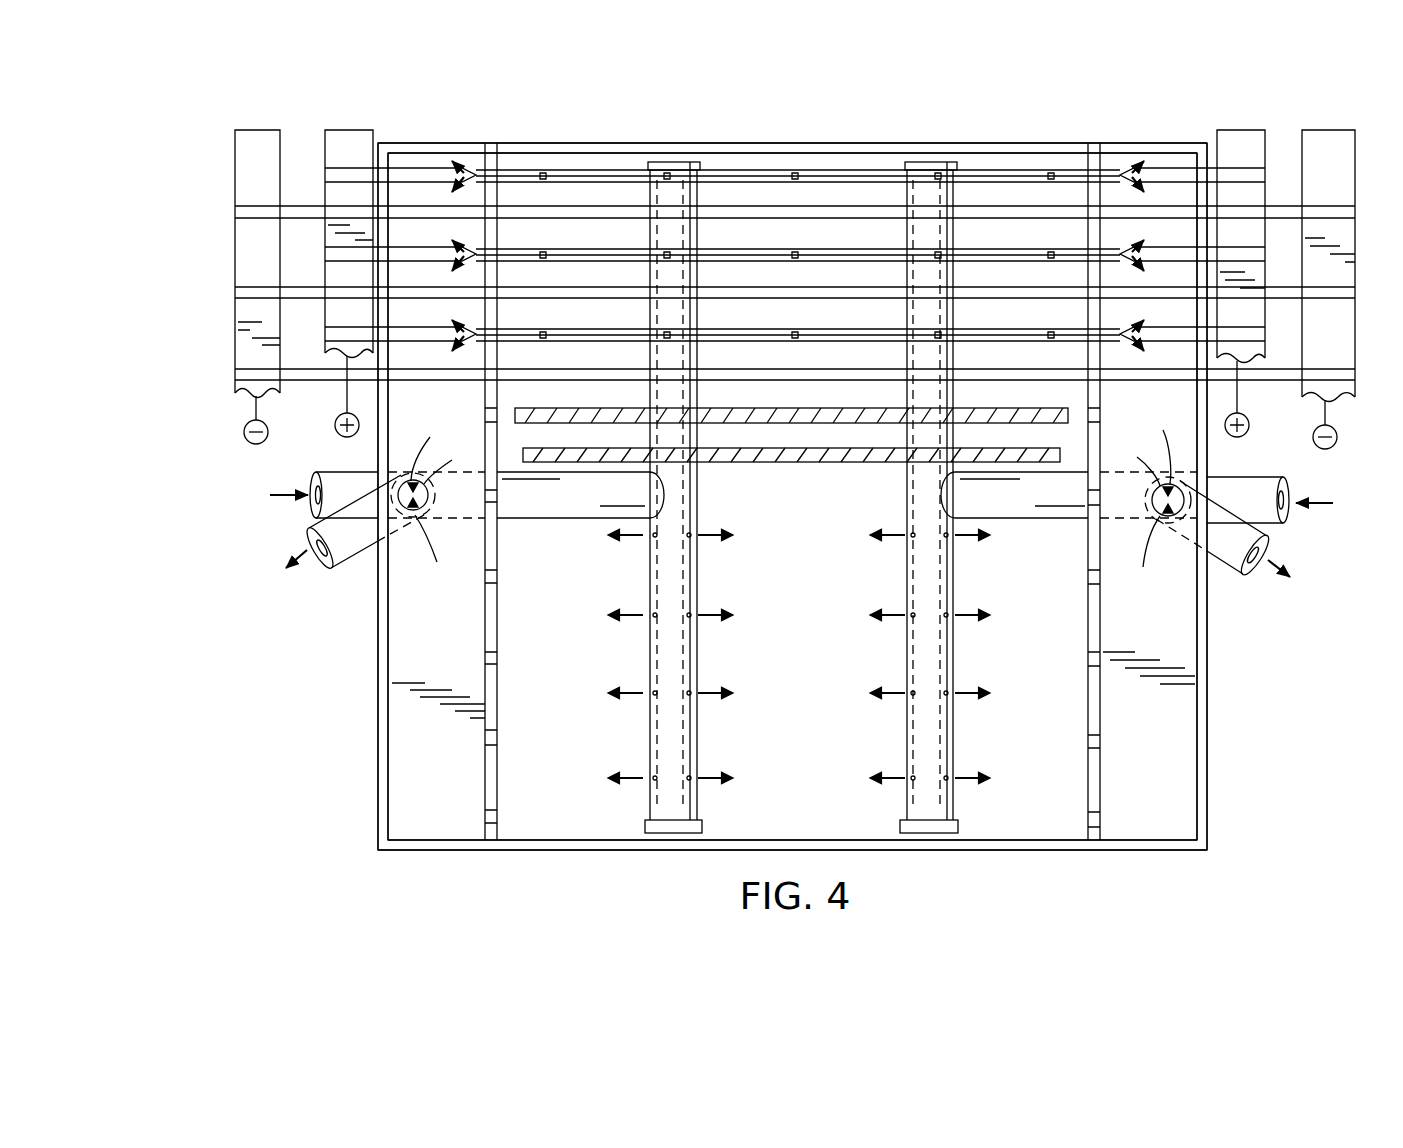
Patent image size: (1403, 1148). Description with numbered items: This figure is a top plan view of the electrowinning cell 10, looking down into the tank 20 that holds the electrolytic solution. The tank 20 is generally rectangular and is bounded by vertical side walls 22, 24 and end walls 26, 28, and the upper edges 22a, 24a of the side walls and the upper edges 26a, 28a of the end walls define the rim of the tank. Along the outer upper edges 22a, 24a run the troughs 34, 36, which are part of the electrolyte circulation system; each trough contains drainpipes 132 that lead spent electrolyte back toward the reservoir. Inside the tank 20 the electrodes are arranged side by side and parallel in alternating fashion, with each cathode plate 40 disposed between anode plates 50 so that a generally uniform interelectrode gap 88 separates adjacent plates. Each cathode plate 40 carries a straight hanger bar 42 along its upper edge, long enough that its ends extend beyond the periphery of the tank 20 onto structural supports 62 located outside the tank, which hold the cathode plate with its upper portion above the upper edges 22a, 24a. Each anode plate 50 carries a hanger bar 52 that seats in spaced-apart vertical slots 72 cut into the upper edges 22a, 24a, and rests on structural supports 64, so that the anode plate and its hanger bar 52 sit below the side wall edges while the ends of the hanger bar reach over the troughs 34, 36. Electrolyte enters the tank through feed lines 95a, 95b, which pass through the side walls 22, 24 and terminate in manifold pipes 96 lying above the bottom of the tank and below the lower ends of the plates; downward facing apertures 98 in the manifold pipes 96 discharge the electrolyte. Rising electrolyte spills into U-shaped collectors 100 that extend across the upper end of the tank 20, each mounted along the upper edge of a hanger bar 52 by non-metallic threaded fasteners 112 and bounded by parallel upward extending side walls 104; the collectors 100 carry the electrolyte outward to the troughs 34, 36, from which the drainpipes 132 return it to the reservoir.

The electrowinning cell 10 is at (280, 765).
The tank 20 is at (1049, 860).
The side wall 22 is at (484, 773).
The upper edge of side wall 22a is at (490, 604).
The side wall 24 is at (1097, 792).
The upper edge of side wall 24a is at (1097, 614).
The end wall 26 is at (598, 850).
The upper edge of end wall 26a is at (533, 841).
The end wall 28 is at (985, 146).
The upper edge of end wall 28a is at (791, 153).
The trough 34 is at (410, 656).
The trough 36 is at (1177, 719).
The cathode plate 40 is at (744, 463).
The hanger bar 42 is at (258, 207).
The anode plate 50 is at (862, 424).
The hanger bar 52 is at (350, 170).
The structural support 62 is at (250, 249).
The structural support 64 is at (337, 307).
The vertical slot 72 is at (492, 656).
The interelectrode gap 88 is at (603, 233).
The feed line 95a is at (338, 475).
The feed line 95b is at (1270, 511).
The manifold pipe 96 is at (678, 742).
The aperture 98 is at (688, 692).
The electrolyte collector 100 is at (820, 264).
The side wall of collector 104 is at (603, 341).
The threaded fastener 112 is at (793, 183).
The drainpipe 132 is at (425, 482).